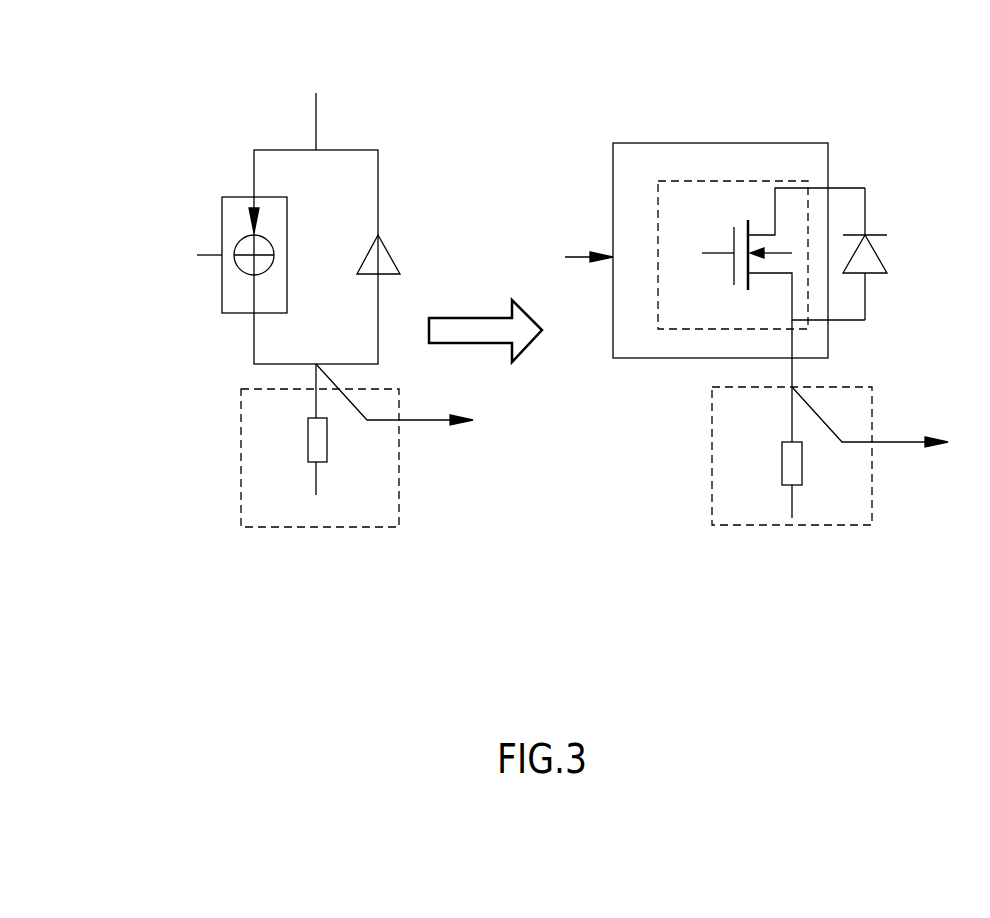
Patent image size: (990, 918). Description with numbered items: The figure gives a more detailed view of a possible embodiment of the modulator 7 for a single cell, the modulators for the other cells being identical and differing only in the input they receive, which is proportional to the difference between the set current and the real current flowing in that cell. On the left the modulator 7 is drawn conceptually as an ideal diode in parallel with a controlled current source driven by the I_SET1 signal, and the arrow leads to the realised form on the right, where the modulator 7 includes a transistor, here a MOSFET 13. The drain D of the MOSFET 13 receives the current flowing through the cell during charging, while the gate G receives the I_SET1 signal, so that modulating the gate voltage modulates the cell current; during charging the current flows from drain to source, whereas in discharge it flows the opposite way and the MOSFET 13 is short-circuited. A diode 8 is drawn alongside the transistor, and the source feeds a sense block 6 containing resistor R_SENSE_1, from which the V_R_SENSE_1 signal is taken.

The sense resistor block (R_SENSE_1) 6 is at (281, 527).
The modulator 7 is at (205, 300).
The diode 8 is at (387, 260).
The MOSFET 13 is at (745, 205).